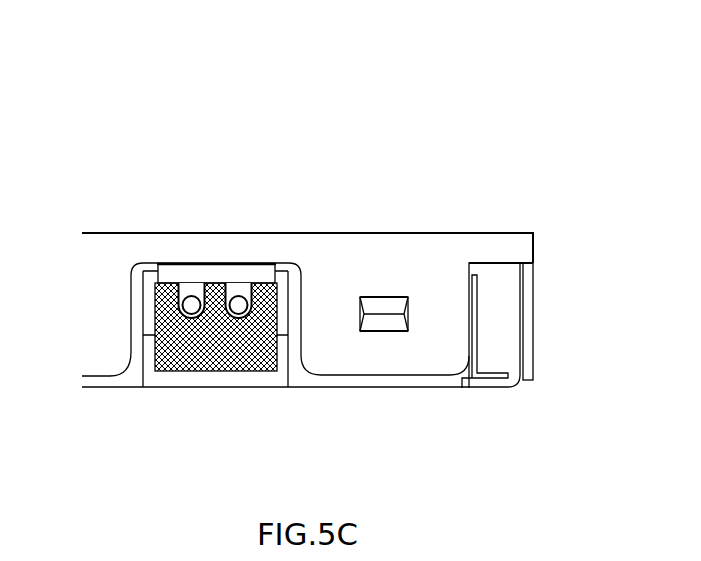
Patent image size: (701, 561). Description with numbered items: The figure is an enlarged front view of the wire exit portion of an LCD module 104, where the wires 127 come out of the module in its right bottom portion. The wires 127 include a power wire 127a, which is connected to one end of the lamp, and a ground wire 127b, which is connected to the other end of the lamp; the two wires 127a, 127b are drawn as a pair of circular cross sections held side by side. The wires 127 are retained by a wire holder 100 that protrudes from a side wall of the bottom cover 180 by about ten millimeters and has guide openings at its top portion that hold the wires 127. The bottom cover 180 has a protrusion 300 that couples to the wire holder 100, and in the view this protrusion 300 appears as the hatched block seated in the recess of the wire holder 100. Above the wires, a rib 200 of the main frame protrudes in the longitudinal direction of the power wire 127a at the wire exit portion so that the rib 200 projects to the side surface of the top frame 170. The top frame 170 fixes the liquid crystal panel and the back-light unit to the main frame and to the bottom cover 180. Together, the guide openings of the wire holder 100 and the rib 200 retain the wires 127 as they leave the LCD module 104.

The LCD module 104 is at (409, 126).
The wire holder 100 is at (275, 283).
The top frame 170 is at (425, 270).
The bottom cover 180 is at (352, 380).
The rib 200 is at (175, 273).
The protrusion 300 is at (227, 377).
The wires 127 is at (242, 172).
The power wire 127a is at (240, 300).
The ground wire 127b is at (190, 300).